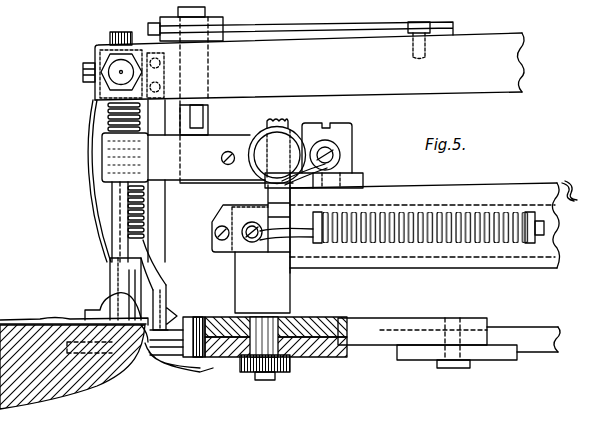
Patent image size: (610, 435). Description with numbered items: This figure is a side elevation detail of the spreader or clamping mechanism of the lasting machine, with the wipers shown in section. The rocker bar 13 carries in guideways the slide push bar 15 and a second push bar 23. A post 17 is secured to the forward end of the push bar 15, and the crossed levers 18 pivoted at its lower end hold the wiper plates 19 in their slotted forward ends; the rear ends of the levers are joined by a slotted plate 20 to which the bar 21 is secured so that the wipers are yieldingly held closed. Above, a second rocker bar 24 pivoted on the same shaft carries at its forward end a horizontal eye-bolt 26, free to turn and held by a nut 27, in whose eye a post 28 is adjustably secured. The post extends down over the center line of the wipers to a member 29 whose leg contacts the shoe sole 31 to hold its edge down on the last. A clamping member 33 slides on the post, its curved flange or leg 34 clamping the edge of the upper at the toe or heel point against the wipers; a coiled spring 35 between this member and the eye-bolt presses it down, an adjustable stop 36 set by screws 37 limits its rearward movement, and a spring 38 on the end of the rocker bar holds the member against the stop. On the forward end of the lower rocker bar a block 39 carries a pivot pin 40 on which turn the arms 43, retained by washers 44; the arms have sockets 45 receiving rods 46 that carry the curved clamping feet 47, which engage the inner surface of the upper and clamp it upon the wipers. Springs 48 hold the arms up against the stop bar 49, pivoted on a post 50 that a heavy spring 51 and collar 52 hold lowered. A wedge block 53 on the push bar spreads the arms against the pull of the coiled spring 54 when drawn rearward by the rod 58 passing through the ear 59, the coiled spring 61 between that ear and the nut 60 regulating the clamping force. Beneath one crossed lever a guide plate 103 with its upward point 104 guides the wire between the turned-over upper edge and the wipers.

The rocker bar 13 is at (452, 190).
The slide push bar 15 is at (565, 182).
The post 17 is at (292, 308).
The crossed levers 18 is at (372, 341).
The wiper plates 19 is at (180, 356).
The plate 20 is at (507, 357).
The bar 21 is at (547, 350).
The push bar 23 is at (279, 262).
The rocker bar 24 is at (521, 83).
The eye-bolt 26 is at (118, 70).
The nut 27 is at (104, 63).
The post 28 is at (119, 32).
The member 29 is at (141, 292).
The shoe sole 31 is at (48, 319).
The clamping member 33 is at (150, 255).
The curved flange or leg 34 is at (168, 305).
The coiled spring 35 is at (106, 110).
The adjustable stop 36 is at (163, 206).
The screws 37 is at (166, 88).
The spring 38 is at (87, 162).
The block 39 is at (364, 181).
The pivot pin or screw 40 is at (348, 123).
The arms 43 is at (212, 145).
The washers 44 is at (354, 148).
The sockets 45 is at (102, 146).
The rods 46 is at (113, 212).
The clamping feet or spreaders 47 is at (100, 311).
The springs 48 is at (259, 134).
The stop bar 49 is at (197, 136).
The post 50 is at (206, 12).
The heavy spring 51 is at (320, 22).
The collar 52 is at (172, 21).
The wedge block 53 is at (267, 190).
The coiled spring 54 is at (285, 120).
The rod 58 is at (311, 250).
The ear 59 is at (325, 248).
The nut 60 is at (531, 246).
The coiled spring 61 is at (408, 246).
The guide plate 103 is at (200, 369).
The projection or point 104 is at (148, 338).